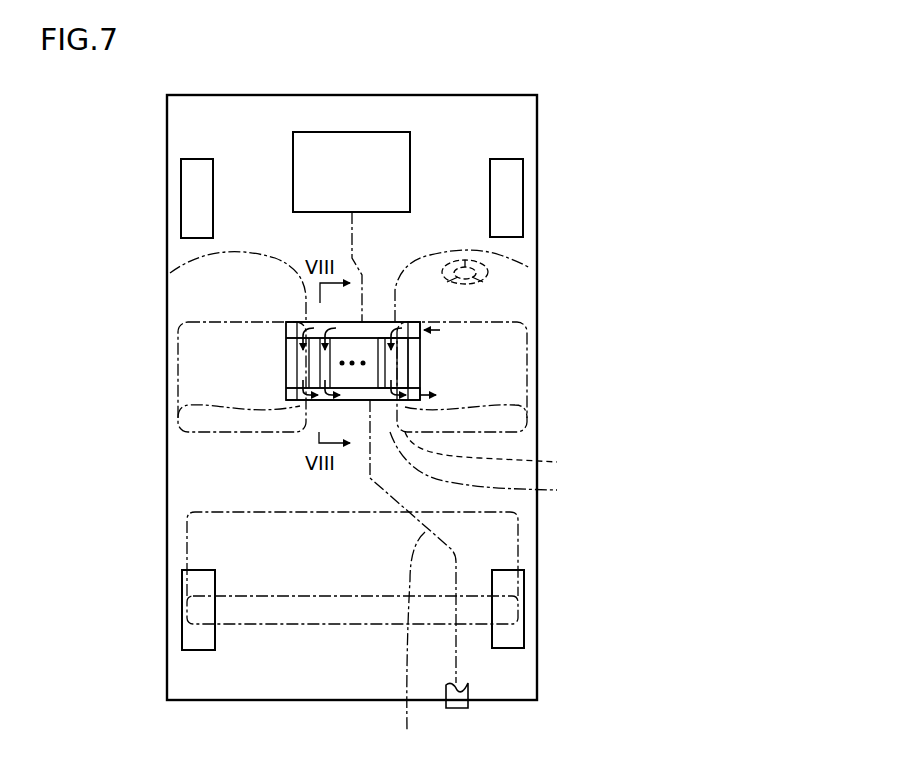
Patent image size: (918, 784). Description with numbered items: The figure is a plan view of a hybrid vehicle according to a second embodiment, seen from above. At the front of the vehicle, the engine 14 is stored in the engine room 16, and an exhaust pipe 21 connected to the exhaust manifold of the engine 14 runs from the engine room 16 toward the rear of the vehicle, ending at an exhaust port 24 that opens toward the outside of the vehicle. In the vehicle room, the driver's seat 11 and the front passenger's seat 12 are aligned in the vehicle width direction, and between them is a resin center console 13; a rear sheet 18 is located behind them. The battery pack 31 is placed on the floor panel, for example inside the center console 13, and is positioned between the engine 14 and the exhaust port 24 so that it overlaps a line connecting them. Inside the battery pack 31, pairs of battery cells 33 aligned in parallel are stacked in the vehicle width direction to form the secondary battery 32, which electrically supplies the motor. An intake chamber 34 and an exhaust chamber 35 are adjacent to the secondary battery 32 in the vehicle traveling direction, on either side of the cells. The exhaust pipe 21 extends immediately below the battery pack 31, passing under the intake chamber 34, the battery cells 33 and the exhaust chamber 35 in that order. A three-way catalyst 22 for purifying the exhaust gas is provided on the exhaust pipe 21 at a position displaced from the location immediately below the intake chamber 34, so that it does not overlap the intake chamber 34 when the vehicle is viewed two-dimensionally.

The driver's seat 11 is at (527, 386).
The front passenger's seat 12 is at (180, 386).
The center console 13 is at (487, 467).
The engine 14 is at (352, 132).
The engine room 16 is at (460, 136).
The rear sheet 18 is at (518, 546).
The exhaust pipe 21 is at (409, 644).
The three-way catalyst 22 is at (495, 453).
The exhaust port 24 is at (457, 708).
The battery pack 31 is at (401, 320).
The secondary battery 32 is at (290, 365).
The battery cells 33 is at (398, 362).
The intake chamber 34 is at (296, 330).
The exhaust chamber 35 is at (292, 400).